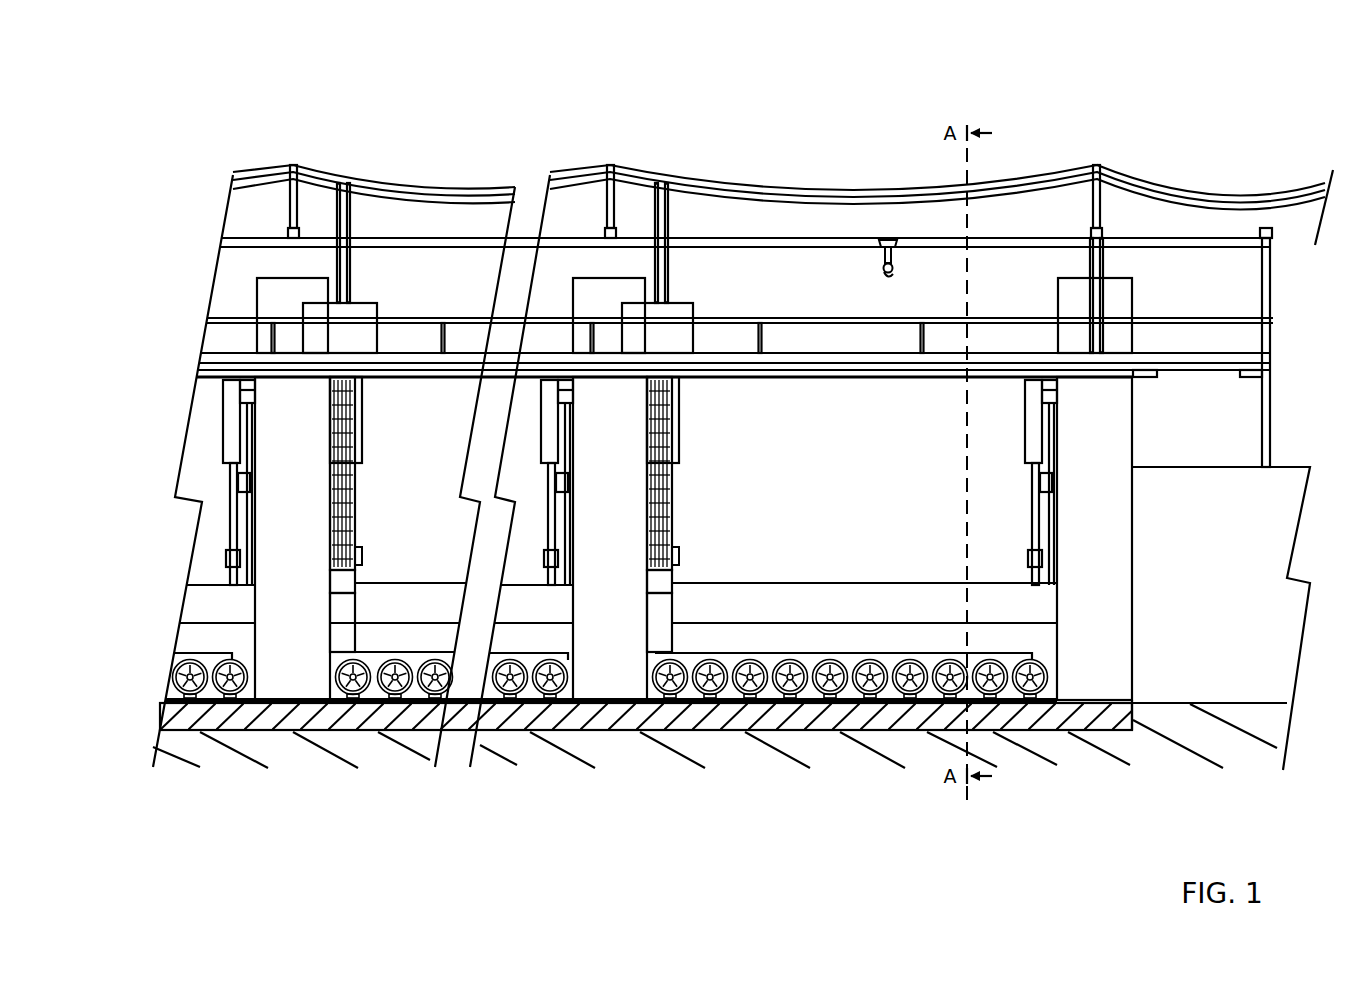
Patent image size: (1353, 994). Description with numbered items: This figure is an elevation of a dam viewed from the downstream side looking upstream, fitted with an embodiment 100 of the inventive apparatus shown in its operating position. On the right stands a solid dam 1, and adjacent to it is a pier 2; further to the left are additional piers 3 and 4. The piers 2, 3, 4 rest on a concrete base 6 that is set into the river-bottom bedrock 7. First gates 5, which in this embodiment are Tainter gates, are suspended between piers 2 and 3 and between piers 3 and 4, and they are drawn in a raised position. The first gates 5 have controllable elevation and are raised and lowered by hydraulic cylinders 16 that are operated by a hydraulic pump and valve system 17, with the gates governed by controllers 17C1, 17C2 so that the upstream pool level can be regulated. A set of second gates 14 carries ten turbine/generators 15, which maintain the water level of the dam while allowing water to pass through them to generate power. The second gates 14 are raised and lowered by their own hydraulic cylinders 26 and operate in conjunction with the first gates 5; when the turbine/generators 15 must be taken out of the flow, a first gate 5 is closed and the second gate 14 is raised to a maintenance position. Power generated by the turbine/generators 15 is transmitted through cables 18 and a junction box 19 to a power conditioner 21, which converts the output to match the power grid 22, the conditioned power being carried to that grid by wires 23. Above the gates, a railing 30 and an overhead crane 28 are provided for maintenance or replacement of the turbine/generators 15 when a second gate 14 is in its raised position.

The embodiment of the inventive apparatus 100 is at (1154, 112).
The solid dam 1 is at (1195, 566).
The pier 2 is at (1085, 546).
The pier 3 is at (605, 548).
The pier 4 is at (286, 539).
The first gate 5 is at (410, 469).
The concrete base 6 is at (1110, 718).
The river-bottom bedrock 7 is at (1191, 741).
The second gate 14 is at (395, 614).
The turbine/generator 15 is at (1040, 690).
The hydraulic cylinder 16 is at (1047, 432).
The hydraulic pump and valve system 17 is at (258, 305).
The controller 17C1 is at (313, 287).
The controller 17C2 is at (736, 210).
The cable 18 is at (668, 485).
The junction box 19 is at (661, 583).
The power conditioner 21 is at (326, 351).
The power grid 22 is at (776, 186).
The wire 23 is at (666, 275).
The hydraulic cylinder 26 is at (1032, 442).
The overhead crane 28 is at (893, 261).
The railing 30 is at (1170, 315).